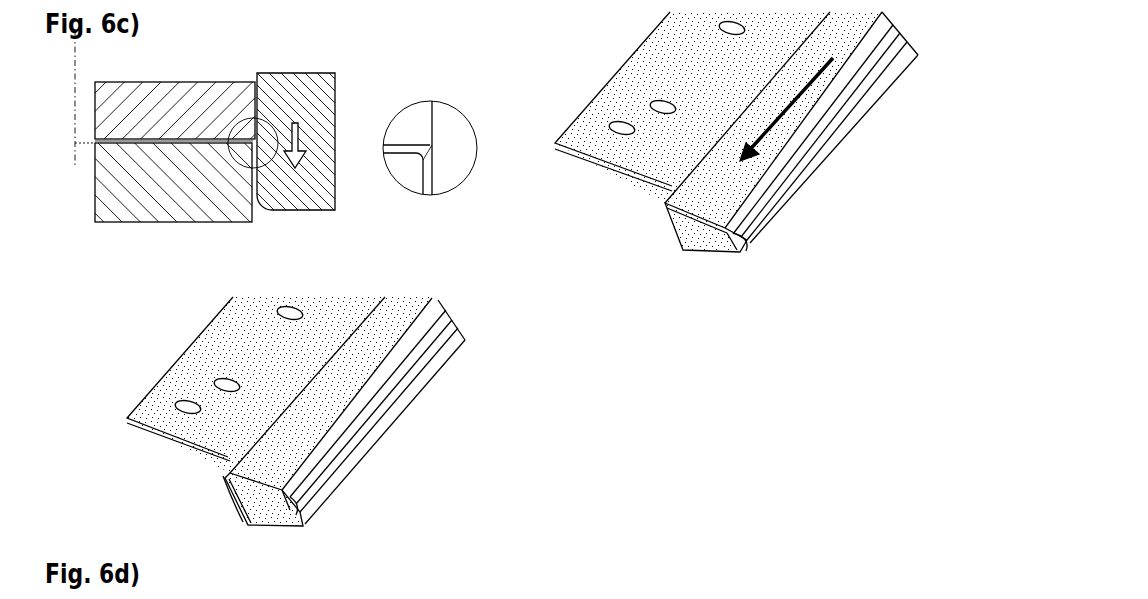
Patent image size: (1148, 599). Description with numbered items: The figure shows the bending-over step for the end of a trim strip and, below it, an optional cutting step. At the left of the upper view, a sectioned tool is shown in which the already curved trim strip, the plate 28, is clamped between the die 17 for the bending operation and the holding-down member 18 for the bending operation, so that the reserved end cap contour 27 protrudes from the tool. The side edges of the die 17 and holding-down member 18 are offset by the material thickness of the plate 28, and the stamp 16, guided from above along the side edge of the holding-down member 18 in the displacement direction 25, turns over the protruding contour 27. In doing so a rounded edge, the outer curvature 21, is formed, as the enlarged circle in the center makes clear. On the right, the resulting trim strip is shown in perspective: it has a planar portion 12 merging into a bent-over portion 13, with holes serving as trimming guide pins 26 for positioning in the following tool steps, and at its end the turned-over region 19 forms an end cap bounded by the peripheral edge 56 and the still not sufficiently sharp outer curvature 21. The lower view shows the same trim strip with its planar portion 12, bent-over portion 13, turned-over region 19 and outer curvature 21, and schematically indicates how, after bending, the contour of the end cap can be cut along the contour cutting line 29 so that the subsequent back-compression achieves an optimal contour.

In FIG. 6c, the planar portion 12 is at (638, 65).
In FIG. 6d, the planar portion 12 is at (217, 343).
In FIG. 6c, the bent-over portion 13 is at (847, 107).
In FIG. 6d, the bent-over portion 13 is at (402, 375).
In FIG. 6c, the stamp for the bending operation 16 is at (295, 203).
In FIG. 6c, the die for the bending operation 17 is at (165, 217).
In FIG. 6c, the holding-down member for the bending operation 18 is at (135, 81).
In FIG. 6c, the turned-over region 19 is at (705, 242).
In FIG. 6d, the turned-over region 19 is at (267, 523).
In FIG. 6c, the outer curvature 21 is at (740, 230).
In FIG. 6d, the outer curvature 21 is at (297, 493).
In FIG. 6c, the displacement direction 25 is at (298, 130).
In FIG. 6c, the trimming guide pins 26 is at (673, 100).
In FIG. 6c, the reserved end cap contour 27 is at (244, 4).
In FIG. 6c, the plate 28 is at (142, 142).
In FIG. 6d, the contour cutting line 29 is at (227, 492).
In FIG. 6c, the peripheral edge 56 is at (673, 227).